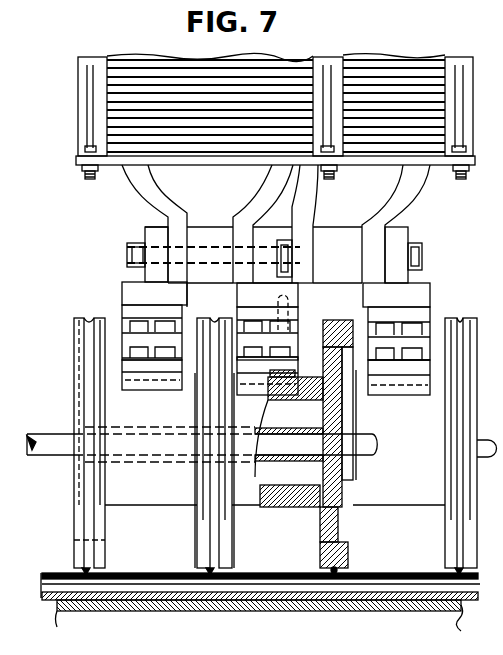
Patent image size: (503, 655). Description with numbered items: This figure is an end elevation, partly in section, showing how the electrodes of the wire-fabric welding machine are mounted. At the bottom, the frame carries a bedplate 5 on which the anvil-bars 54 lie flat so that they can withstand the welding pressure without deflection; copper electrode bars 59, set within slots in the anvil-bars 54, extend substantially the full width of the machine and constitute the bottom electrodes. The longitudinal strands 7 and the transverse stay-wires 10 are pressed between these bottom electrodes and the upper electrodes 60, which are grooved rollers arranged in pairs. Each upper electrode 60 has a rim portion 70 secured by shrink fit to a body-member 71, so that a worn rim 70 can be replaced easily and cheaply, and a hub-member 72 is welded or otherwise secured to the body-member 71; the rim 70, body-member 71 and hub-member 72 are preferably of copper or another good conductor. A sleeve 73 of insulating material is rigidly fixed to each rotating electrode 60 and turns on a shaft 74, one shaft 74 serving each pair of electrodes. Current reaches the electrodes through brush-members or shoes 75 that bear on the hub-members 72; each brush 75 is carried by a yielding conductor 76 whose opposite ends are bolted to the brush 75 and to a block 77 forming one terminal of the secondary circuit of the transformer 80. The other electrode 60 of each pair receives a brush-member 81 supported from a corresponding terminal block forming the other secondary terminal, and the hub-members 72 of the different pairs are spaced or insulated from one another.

The transformer 80 is at (128, 67).
The brush-member 81 is at (143, 290).
The block 77 is at (243, 293).
The yielding conductor 76 is at (130, 332).
The brush-member 75 is at (407, 388).
The shaft 74 is at (50, 443).
The sleeve 73 is at (287, 428).
The hub-member 72 is at (156, 499).
The body-member 71 is at (337, 525).
The rim portion 70 is at (350, 550).
The upper electrode 60 is at (75, 520).
The electrode bar 59 is at (145, 585).
The anvil-bar 54 is at (267, 602).
The stay-wire 10 is at (262, 540).
The bedplate 5 is at (383, 611).
The strand 7 is at (85, 574).